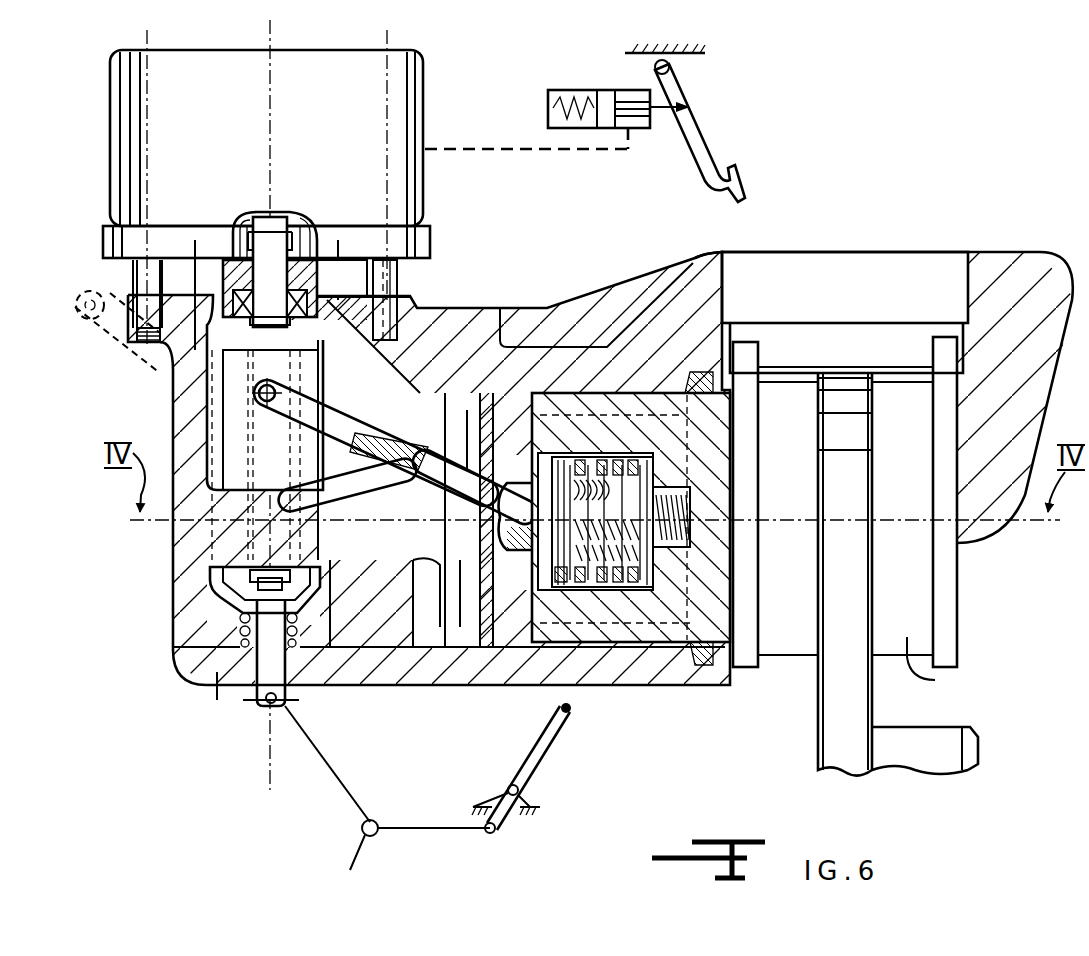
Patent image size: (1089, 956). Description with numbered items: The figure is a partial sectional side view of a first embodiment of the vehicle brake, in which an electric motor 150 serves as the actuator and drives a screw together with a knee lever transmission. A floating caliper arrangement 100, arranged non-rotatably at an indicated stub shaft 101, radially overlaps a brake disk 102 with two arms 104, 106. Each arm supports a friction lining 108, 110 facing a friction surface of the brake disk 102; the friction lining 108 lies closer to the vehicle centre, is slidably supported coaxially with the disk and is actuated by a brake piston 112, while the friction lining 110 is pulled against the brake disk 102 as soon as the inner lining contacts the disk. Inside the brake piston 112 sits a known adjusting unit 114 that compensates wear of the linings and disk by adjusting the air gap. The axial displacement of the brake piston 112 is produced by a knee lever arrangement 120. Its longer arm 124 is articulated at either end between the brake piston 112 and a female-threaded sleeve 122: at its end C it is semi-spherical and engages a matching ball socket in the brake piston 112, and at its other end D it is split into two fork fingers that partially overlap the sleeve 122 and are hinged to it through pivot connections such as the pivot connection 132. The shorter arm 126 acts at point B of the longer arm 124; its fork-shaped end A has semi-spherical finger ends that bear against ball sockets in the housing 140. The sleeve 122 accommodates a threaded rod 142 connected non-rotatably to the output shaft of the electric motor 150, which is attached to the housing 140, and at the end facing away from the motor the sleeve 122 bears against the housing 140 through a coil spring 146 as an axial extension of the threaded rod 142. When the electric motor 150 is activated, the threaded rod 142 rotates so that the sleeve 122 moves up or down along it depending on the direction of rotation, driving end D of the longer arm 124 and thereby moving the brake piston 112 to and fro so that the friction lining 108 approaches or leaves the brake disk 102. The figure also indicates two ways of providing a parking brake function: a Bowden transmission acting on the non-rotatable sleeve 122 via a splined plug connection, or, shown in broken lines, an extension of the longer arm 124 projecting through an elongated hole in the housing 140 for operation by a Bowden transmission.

The electric motor 150 is at (296, 143).
The floating caliper arrangement 100 is at (885, 471).
The arm 104 is at (998, 268).
The arm 106 is at (703, 293).
The friction lining 108 is at (785, 645).
The brake disk 102 is at (835, 733).
The stub shaft 101 is at (940, 737).
The friction lining 110 is at (935, 678).
The brake piston 112 is at (648, 645).
The adjusting unit 114 is at (588, 462).
The knee lever arrangement 120 is at (418, 410).
The longer arm 124 is at (417, 298).
The pivot connection 132 is at (258, 390).
The shorter arm 126 is at (345, 508).
The sleeve 122 is at (258, 603).
The housing 140 is at (217, 700).
The threaded rod 142 is at (300, 640).
The coil spring 146 is at (287, 645).
The end A is at (272, 584).
The point B is at (413, 560).
The end C is at (478, 478).
The end D is at (245, 405).